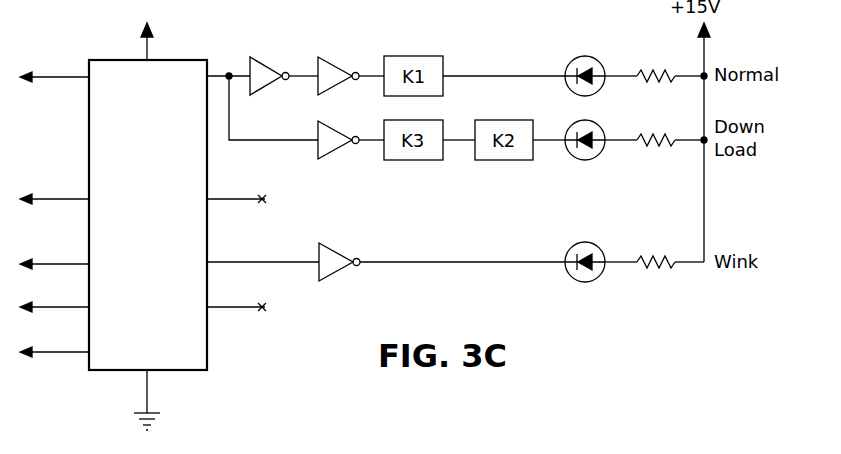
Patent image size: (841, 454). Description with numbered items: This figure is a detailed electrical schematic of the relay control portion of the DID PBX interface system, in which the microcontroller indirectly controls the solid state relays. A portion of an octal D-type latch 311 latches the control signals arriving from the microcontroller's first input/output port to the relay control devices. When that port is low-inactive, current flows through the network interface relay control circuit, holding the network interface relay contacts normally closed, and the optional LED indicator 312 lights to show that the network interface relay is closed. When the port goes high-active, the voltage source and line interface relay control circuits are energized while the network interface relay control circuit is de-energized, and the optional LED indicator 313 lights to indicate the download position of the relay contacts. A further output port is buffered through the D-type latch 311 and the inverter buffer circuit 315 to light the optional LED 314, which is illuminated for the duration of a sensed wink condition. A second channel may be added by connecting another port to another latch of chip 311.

The octal D-type latch 311 is at (209, 343).
The LED indicator 312 is at (585, 56).
The LED indicator 313 is at (585, 120).
The LED 314 is at (588, 242).
The inverter buffer circuit 315 is at (333, 246).